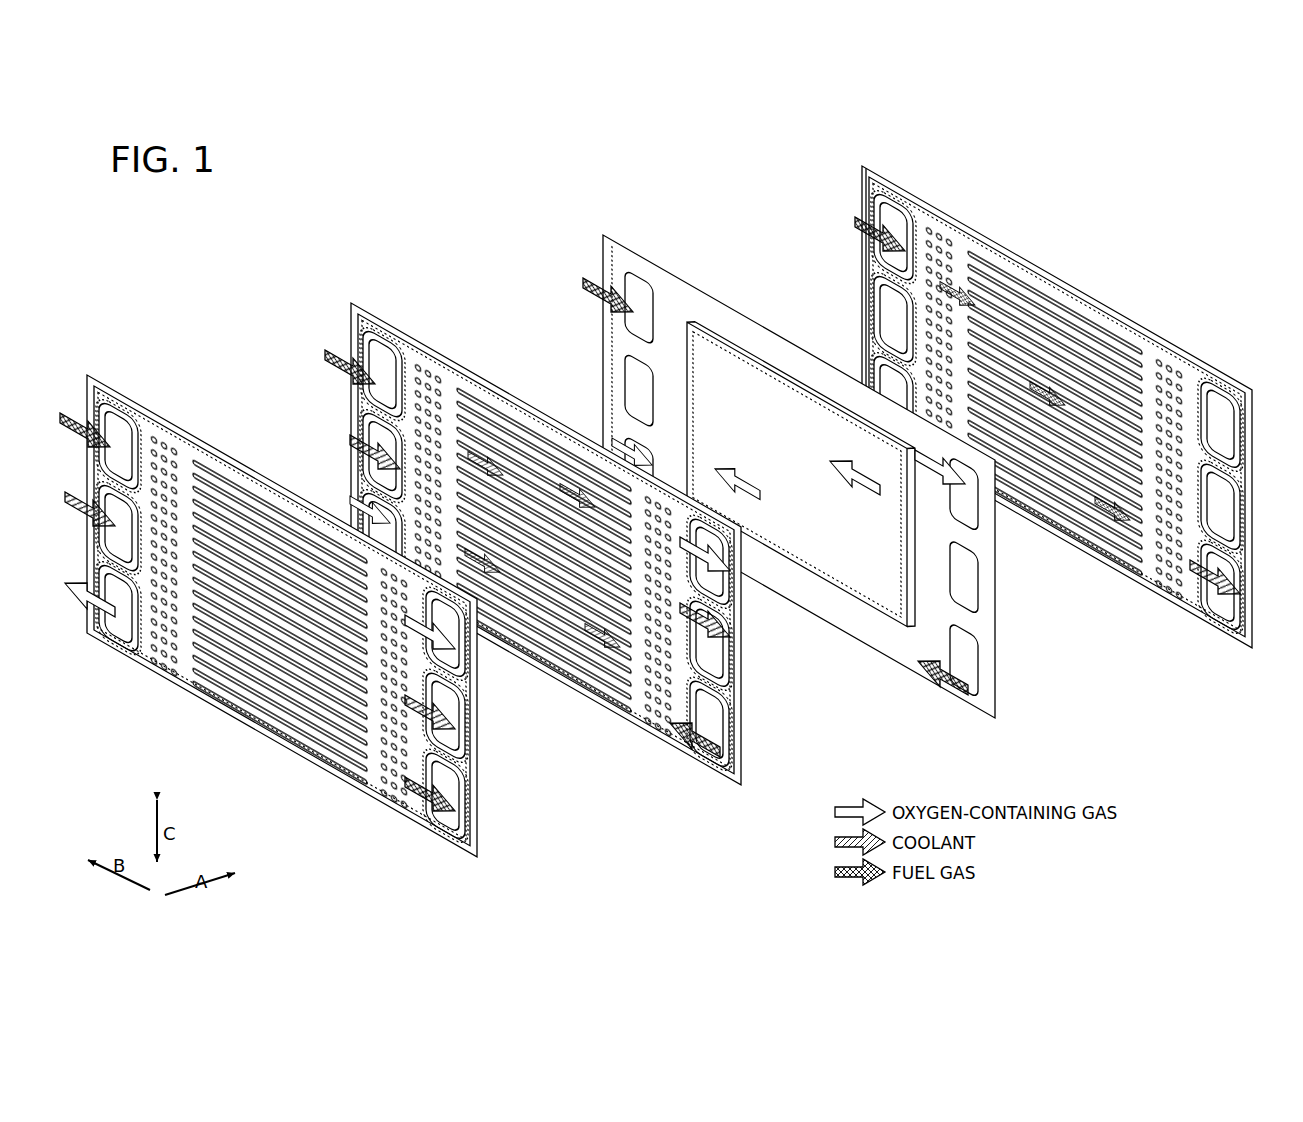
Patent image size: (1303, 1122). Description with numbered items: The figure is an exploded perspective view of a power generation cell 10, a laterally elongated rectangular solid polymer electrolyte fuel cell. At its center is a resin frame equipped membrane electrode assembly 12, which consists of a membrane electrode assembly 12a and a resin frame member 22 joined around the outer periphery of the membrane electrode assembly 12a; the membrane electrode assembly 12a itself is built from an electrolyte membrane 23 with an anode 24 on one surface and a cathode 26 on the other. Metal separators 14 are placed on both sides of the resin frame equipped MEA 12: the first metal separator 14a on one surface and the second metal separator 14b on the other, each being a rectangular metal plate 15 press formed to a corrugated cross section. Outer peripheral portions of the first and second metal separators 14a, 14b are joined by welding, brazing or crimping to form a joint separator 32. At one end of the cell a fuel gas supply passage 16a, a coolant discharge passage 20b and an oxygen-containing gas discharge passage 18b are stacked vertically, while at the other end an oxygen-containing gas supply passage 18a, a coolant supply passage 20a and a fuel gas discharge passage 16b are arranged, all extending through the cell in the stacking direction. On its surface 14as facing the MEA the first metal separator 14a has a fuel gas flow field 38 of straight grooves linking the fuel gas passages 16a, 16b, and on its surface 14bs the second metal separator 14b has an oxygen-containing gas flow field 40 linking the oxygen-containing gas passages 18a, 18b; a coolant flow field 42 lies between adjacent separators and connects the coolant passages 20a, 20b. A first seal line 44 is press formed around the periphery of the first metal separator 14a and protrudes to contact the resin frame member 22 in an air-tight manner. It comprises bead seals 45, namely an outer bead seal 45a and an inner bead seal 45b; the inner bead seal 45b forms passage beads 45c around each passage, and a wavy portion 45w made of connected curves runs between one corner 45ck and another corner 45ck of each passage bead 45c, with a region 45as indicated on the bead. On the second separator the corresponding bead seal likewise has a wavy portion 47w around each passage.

The power generation cell 10 is at (368, 200).
The resin frame equipped membrane electrode assembly 12 is at (600, 232).
The membrane electrode assembly 12a is at (845, 588).
The metal separator 14 is at (905, 172).
The first metal separator 14a is at (88, 372).
The second metal separator 14b is at (350, 299).
The surface of the first metal separator 14as is at (1175, 597).
The surface of the second metal separator 14bs is at (640, 705).
The metal plate 15 is at (416, 338).
The fuel gas supply passage 16a is at (126, 428).
The fuel gas discharge passage 16b is at (458, 802).
The oxygen-containing gas supply passage 18a is at (448, 647).
The oxygen-containing gas discharge passage 18b is at (372, 515).
The coolant supply passage 20a is at (466, 746).
The coolant discharge passage 20b is at (377, 433).
The resin frame member 22 is at (862, 630).
The electrolyte membrane 23 is at (835, 585).
The anode 24 is at (993, 606).
The cathode 26 is at (795, 578).
The joint separator 32 is at (350, 252).
The fuel gas flow field 38 is at (220, 657).
The oxygen-containing gas flow field 40 is at (511, 424).
The coolant flow field 42 is at (471, 405).
The first seal line 44 is at (378, 825).
The bead seal 45 is at (688, 516).
The outer bead seal 45a is at (290, 752).
The inner bead seal 45b is at (345, 767).
The bead seal portion 45as is at (148, 437).
The passage bead 45c is at (97, 418).
The wavy portion 45w is at (112, 468).
The corner 45ck is at (425, 752).
The wavy portion 47w is at (878, 358).